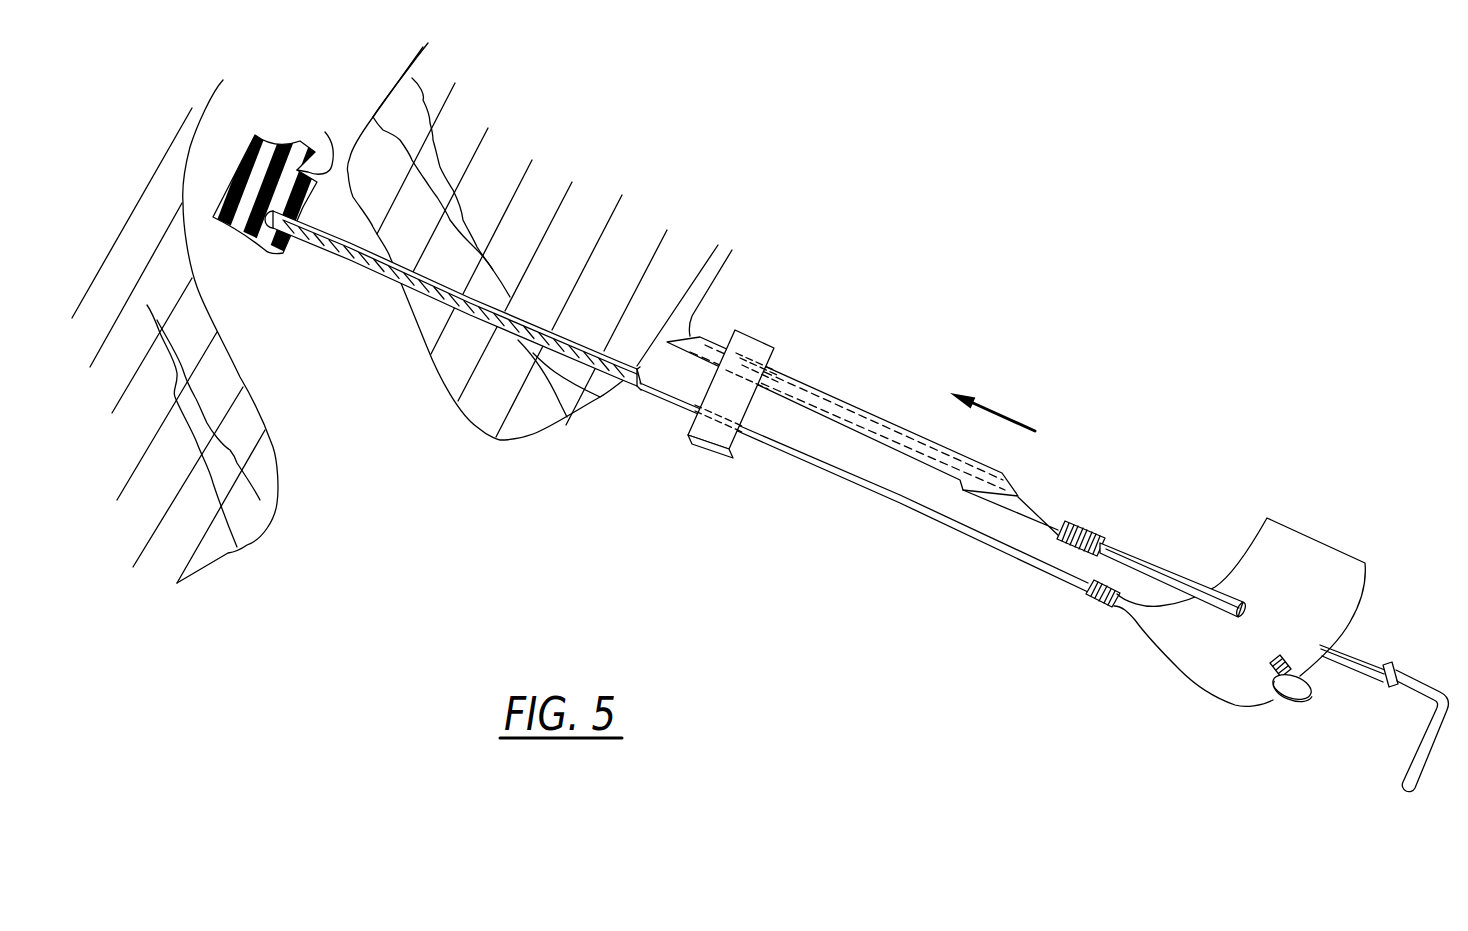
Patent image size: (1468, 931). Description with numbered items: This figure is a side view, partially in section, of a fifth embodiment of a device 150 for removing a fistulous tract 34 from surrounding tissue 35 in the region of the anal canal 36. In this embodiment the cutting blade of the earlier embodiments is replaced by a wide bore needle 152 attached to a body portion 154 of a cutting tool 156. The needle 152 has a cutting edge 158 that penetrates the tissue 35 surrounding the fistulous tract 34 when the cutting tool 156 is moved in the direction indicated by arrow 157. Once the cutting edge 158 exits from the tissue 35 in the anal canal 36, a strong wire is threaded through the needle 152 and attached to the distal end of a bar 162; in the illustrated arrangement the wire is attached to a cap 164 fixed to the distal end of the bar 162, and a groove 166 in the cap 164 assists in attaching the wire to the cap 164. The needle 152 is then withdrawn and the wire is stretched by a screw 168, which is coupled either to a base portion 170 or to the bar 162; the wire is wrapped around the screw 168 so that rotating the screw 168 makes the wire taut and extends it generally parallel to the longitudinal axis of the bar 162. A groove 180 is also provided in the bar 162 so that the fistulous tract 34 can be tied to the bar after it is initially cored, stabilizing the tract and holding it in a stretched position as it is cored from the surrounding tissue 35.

The fistulous tract 34 is at (403, 287).
The surrounding tissue 35 is at (538, 234).
The anal canal 36 is at (345, 361).
The device 150 is at (856, 501).
The wide bore needle 152 is at (812, 388).
The body portion 154 is at (1150, 565).
The cutting tool 156 is at (1043, 521).
The arrow 157 is at (1005, 410).
The cutting edge 158 is at (688, 335).
The bar 162 is at (867, 483).
The cap 164 is at (272, 124).
The groove 166 is at (325, 132).
The screw 168 is at (1285, 700).
The base portion 170 is at (1303, 557).
The groove 180 is at (645, 420).